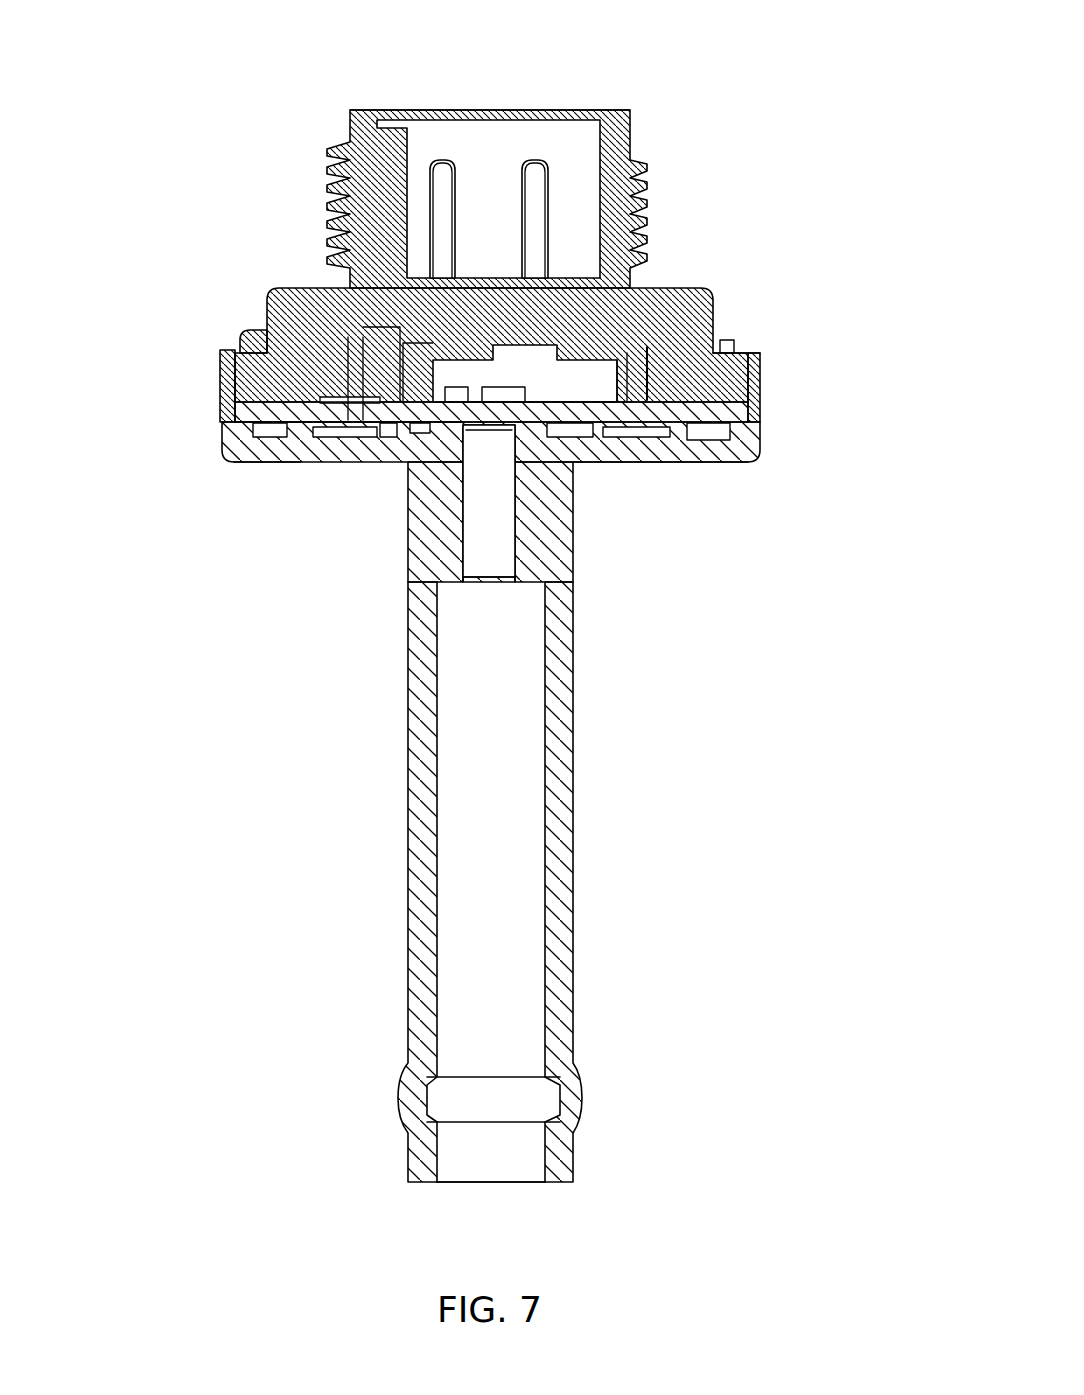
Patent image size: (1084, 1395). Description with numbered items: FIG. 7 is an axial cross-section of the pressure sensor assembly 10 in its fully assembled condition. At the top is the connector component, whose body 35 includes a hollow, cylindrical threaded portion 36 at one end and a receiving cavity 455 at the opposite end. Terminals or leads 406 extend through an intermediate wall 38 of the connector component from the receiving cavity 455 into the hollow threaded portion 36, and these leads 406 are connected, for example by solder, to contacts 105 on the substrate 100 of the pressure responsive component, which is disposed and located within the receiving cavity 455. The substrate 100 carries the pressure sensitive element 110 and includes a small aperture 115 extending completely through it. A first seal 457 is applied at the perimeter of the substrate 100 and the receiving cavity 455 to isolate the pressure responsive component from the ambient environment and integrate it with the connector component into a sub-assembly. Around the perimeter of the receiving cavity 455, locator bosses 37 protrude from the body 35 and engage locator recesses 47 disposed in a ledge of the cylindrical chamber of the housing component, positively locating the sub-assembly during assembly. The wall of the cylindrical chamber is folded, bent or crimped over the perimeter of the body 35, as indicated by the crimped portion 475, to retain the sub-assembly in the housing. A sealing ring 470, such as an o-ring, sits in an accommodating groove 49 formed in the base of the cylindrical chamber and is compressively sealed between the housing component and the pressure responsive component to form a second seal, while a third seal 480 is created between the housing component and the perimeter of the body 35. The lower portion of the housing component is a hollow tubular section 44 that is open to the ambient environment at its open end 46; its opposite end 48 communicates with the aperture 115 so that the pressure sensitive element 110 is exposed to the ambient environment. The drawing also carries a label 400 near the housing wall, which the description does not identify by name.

The pressure sensor assembly 10 is at (197, 138).
The threaded portion 36 is at (363, 122).
The terminals or leads 406 is at (640, 148).
The intermediate wall 38 is at (420, 297).
The body 35 is at (338, 286).
The pressure sensitive element 110 is at (503, 397).
The contacts 105 is at (333, 397).
The third seal 480 is at (740, 337).
The outer shell 400 is at (222, 352).
The crimped portion 475 is at (765, 358).
The receiving cavity 455 is at (627, 353).
The locator bosses 37 is at (252, 424).
The locator recesses 47 is at (710, 440).
The first seal 457 is at (258, 463).
The accommodating groove 49 is at (425, 430).
The substrate 100 is at (633, 415).
The sealing ring 470 is at (580, 430).
The aperture 115 is at (496, 428).
The opposite end 48 is at (505, 463).
The tubular section 44 is at (406, 848).
The open end 46 is at (447, 1193).